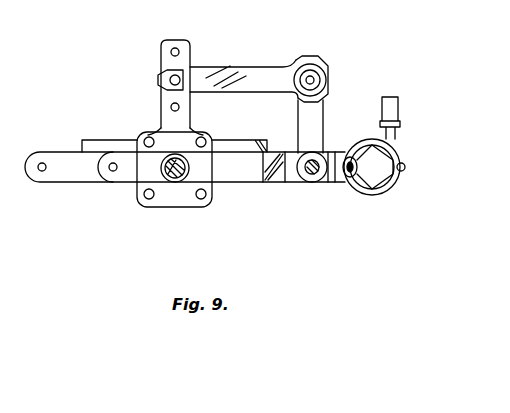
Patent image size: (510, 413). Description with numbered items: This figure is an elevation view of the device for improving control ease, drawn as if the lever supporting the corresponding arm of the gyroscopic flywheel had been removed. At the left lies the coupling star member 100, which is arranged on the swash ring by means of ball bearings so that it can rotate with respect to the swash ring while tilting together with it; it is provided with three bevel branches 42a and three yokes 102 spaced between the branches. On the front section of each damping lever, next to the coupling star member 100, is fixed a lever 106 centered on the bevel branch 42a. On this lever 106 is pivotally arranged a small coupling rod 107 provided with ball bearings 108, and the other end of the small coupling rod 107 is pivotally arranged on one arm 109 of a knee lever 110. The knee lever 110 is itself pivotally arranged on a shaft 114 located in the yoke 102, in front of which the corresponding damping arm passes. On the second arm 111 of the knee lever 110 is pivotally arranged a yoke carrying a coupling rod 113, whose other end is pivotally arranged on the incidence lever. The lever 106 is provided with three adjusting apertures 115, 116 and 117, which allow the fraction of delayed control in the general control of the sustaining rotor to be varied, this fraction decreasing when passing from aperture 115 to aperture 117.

The coupling star member 100 is at (94, 140).
The yoke 102 is at (42, 172).
The bevel branch 42a is at (165, 184).
The lever 106 is at (158, 112).
The small coupling rod 107 is at (224, 67).
The ball bearings 108 is at (316, 66).
The arm of the knee lever 109 is at (322, 118).
The knee lever 110 is at (305, 180).
The second arm of the knee lever 111 is at (345, 190).
The coupling rod 113 is at (400, 110).
The shaft 114 is at (336, 150).
The adjusting aperture 115 is at (178, 50).
The adjusting aperture 116 is at (170, 80).
The adjusting aperture 117 is at (180, 107).